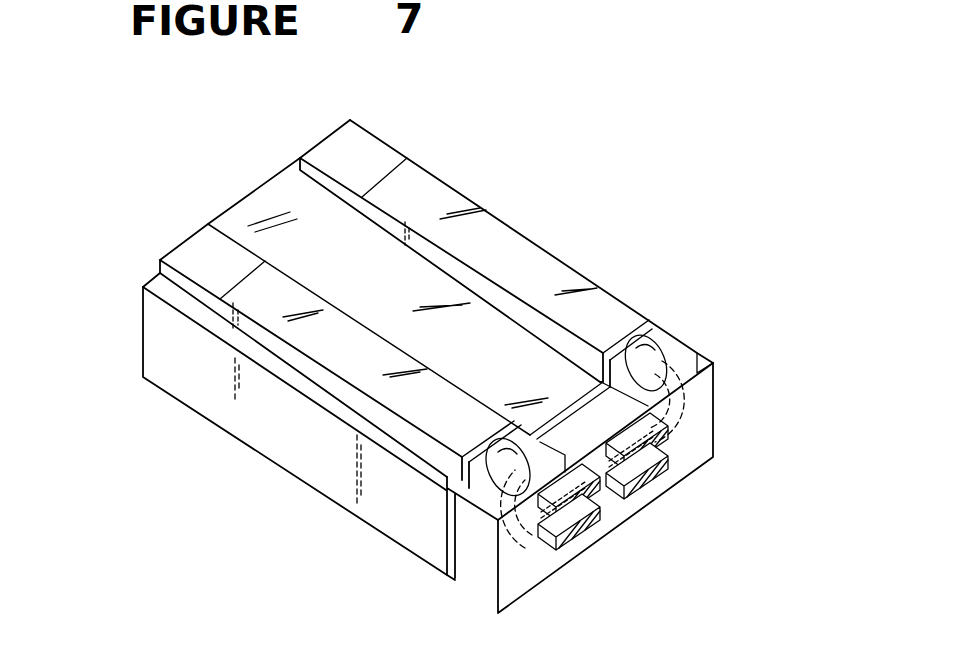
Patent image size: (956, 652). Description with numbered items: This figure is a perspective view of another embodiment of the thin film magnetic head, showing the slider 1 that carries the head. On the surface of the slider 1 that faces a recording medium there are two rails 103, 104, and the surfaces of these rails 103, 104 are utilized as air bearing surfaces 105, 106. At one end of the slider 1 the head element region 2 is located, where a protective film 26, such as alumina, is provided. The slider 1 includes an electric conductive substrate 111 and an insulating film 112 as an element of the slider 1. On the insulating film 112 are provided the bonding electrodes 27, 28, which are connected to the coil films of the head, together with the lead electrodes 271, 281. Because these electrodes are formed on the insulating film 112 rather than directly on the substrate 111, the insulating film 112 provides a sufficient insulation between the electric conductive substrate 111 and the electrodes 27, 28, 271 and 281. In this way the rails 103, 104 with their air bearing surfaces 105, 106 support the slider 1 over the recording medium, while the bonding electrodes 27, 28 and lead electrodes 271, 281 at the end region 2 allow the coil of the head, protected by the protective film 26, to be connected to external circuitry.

The slider 1 is at (206, 434).
The end cap / terminal holder 2 is at (670, 345).
The protective film 26 is at (523, 578).
The bonding electrode 27 is at (615, 495).
The bonding electrode 28 is at (650, 490).
The rail 103 is at (160, 268).
The rail 104 is at (302, 170).
The air bearing surface 105 is at (353, 345).
The air bearing surface 106 is at (533, 278).
The electric conductive substrate 111 is at (313, 467).
The insulating film 112 is at (447, 568).
The lead electrode 271 is at (652, 423).
The lead electrode 281 is at (675, 432).